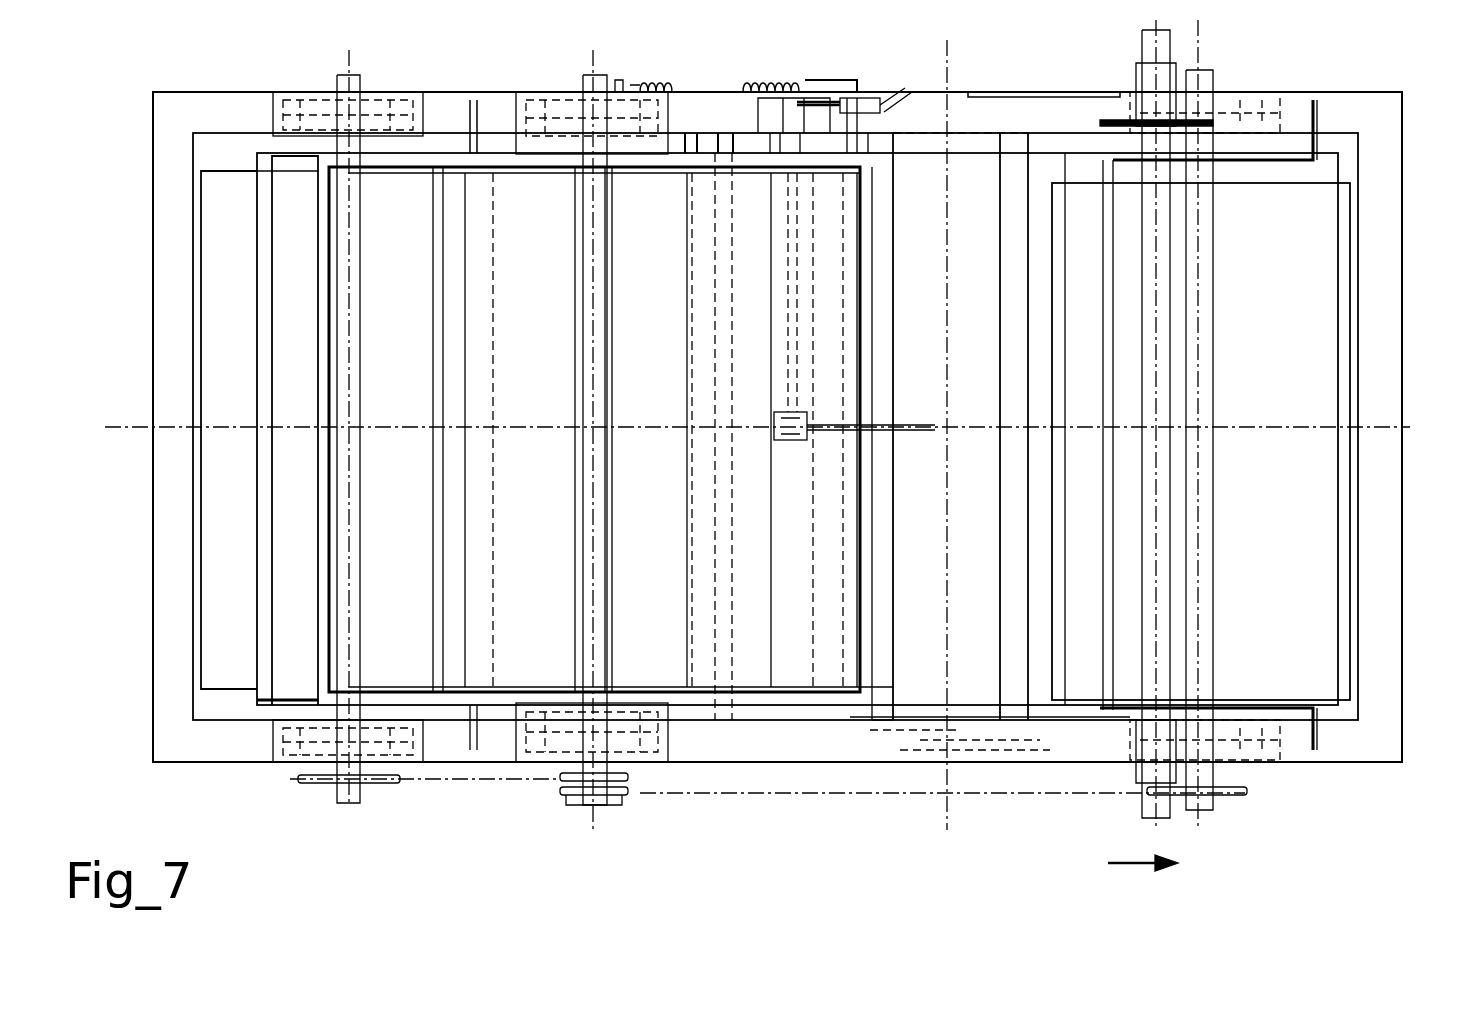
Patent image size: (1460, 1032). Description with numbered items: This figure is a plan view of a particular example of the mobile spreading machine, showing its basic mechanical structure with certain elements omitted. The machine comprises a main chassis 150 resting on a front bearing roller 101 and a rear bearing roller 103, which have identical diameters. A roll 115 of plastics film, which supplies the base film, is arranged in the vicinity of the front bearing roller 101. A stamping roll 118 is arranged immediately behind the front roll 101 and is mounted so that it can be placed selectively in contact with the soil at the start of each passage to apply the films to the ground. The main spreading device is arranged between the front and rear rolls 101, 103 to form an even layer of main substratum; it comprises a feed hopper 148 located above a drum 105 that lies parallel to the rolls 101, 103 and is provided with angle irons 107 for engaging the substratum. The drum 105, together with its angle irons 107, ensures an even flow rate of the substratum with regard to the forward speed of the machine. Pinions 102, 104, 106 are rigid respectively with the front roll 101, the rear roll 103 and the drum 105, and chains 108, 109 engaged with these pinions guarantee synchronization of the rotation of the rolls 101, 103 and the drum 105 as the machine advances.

The front bearing roller 101 is at (1312, 207).
The pinion 102 is at (1245, 793).
The rear bearing roller 103 is at (228, 677).
The pinion 104 is at (315, 778).
The drum 105 is at (653, 542).
The pinion 106 is at (606, 806).
The angle irons 107 is at (603, 325).
The chain 108 is at (1069, 793).
The chain 109 is at (473, 777).
The roll of plastics film 115 is at (1105, 122).
The stamping roll 118 is at (979, 153).
The feed hopper 148 is at (322, 216).
The main chassis 150 is at (1365, 745).